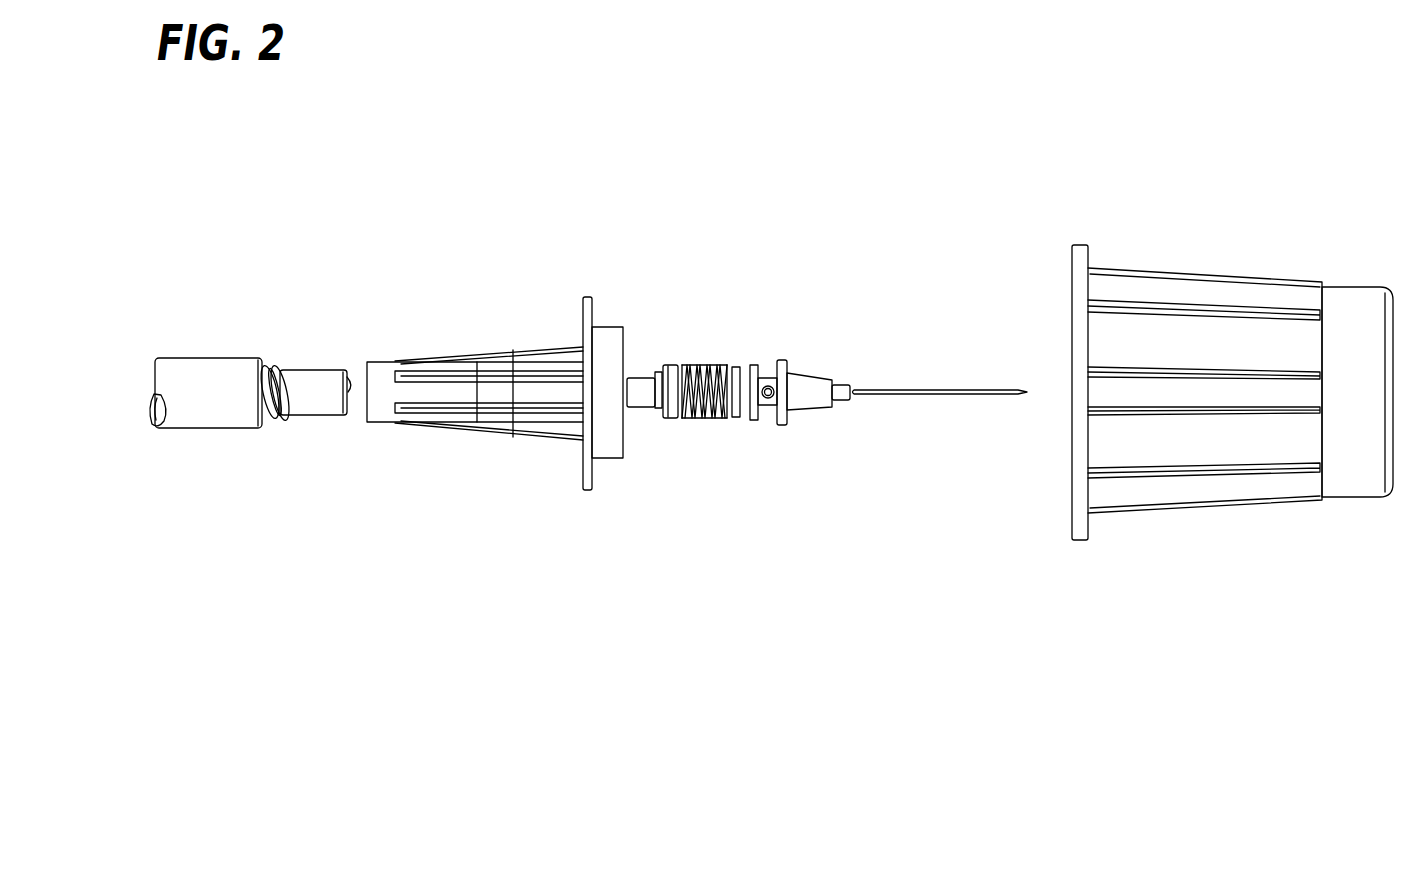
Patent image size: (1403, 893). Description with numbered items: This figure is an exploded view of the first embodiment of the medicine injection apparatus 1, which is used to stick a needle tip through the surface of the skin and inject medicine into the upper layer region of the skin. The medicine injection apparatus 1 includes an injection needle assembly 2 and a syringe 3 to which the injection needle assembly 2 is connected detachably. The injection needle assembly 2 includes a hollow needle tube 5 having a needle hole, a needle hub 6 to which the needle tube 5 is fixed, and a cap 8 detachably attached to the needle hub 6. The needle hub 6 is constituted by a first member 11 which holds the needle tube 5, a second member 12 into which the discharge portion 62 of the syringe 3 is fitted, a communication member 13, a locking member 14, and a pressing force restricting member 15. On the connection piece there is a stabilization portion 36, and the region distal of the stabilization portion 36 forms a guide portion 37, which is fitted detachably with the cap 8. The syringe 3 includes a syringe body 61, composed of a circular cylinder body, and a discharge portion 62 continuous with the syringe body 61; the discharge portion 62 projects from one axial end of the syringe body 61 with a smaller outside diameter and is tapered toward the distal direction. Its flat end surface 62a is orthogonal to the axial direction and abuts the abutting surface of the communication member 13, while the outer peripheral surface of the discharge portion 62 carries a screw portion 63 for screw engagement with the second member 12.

The medicine injection apparatus 1 is at (1268, 206).
The injection needle assembly 2 is at (877, 550).
The syringe 3 is at (193, 344).
The hollow needle tube 5 is at (953, 395).
The needle hub 6 is at (572, 256).
The cap 8 is at (1213, 501).
The first member 11 is at (777, 426).
The second member 12 is at (387, 423).
The communication member 13 is at (641, 380).
The locking member 14 is at (671, 420).
The pressing force restricting member 15 is at (697, 367).
The stabilization portion 36 is at (614, 459).
The guide portion 37 is at (588, 491).
The syringe body 61 is at (200, 424).
The discharge portion 62 is at (331, 413).
The end surface 62a is at (356, 385).
The screw portion 63 is at (286, 417).